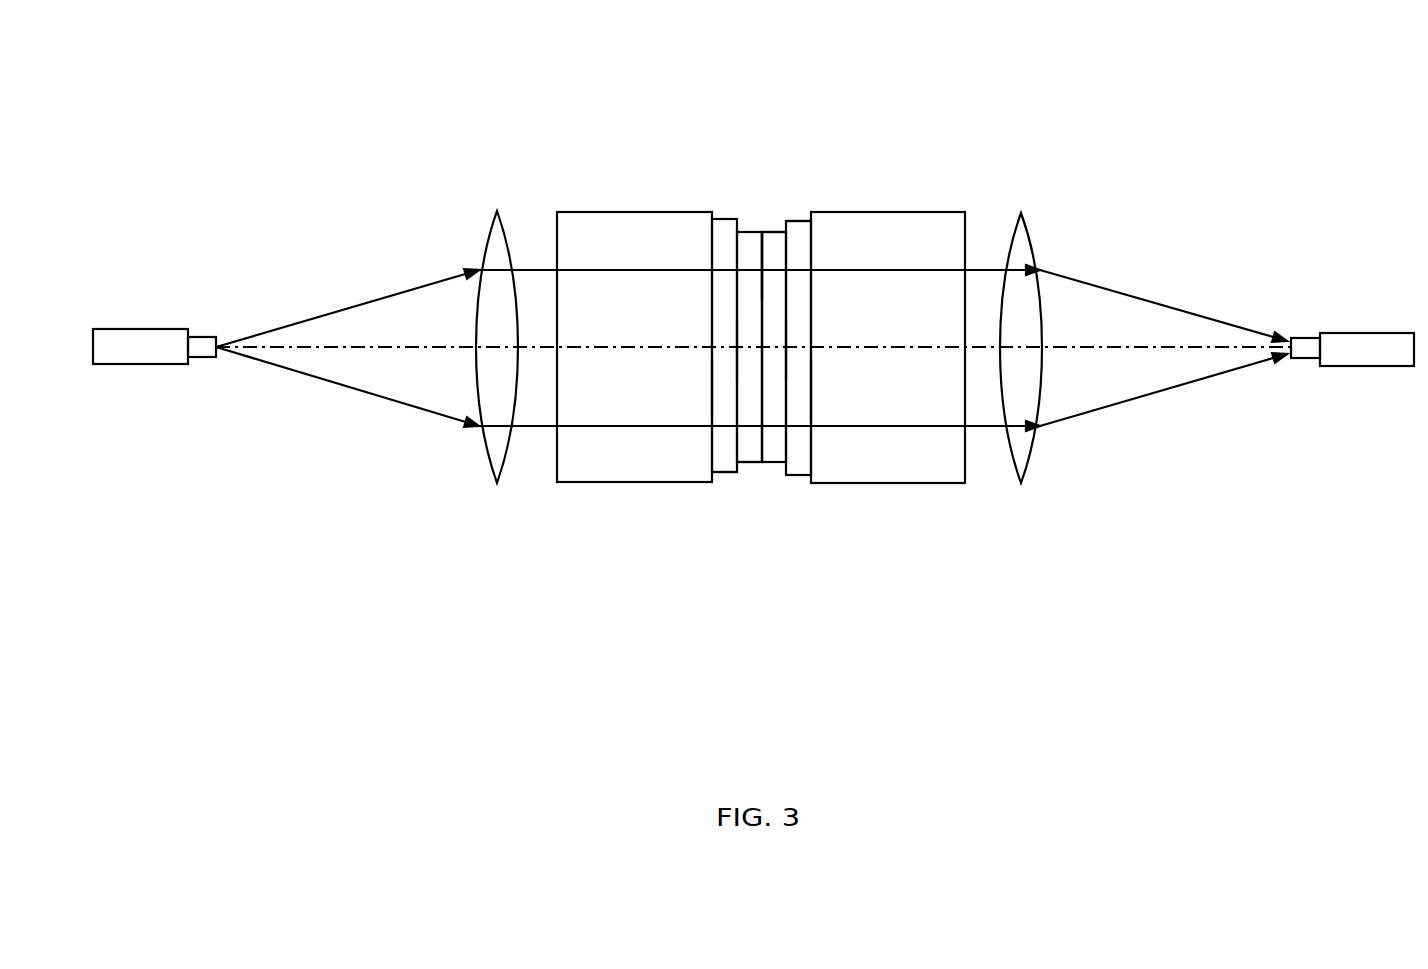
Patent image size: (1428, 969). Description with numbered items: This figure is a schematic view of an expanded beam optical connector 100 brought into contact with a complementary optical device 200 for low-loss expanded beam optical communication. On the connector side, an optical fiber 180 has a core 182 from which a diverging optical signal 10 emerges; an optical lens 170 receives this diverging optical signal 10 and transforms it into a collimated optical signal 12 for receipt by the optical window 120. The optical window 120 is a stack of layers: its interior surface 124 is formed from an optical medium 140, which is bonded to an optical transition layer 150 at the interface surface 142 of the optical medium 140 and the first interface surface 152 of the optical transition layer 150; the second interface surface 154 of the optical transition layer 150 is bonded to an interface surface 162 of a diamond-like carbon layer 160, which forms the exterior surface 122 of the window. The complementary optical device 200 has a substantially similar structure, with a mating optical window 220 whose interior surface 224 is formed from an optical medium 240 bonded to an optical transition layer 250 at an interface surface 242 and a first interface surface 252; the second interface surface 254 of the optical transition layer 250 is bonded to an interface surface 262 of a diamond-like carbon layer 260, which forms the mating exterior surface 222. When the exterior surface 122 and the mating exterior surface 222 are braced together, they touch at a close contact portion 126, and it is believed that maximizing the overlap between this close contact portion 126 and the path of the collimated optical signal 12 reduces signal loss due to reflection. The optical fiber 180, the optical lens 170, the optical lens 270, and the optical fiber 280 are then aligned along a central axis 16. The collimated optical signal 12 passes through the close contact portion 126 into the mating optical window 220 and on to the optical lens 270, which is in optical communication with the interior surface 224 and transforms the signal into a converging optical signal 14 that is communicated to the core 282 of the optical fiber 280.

The expanded beam optical connector 100 is at (557, 317).
The complementary optical device 200 is at (967, 336).
The diverging optical signal 10 is at (365, 283).
The collimated optical signal 12 is at (545, 257).
The converging optical signal 14 is at (1158, 297).
The central axis 16 is at (378, 347).
The optical fiber 180 is at (148, 312).
The core 182 is at (200, 360).
The optical fiber 280 is at (1368, 321).
The core 282 is at (1307, 362).
The optical lens 170 is at (497, 211).
The optical lens 270 is at (1021, 213).
The optical window 120 is at (624, 358).
The mating optical window 220 is at (905, 364).
The optical medium 140 is at (635, 211).
The optical medium 240 is at (873, 211).
The optical transition layer 150 is at (718, 219).
The optical transition layer 250 is at (797, 476).
The diamond-like carbon layer 160 is at (745, 232).
The diamond-like carbon layer 260 is at (772, 462).
The close contact portion 126 is at (762, 222).
The exterior surface 122 is at (762, 286).
The mating exterior surface 222 is at (762, 278).
The interior surface 124 is at (557, 482).
The interior surface 224 is at (965, 483).
The interface surface 142 is at (713, 383).
The interface surface 242 is at (811, 388).
The first interface surface 152 is at (716, 472).
The second interface surface 154 is at (737, 339).
The first interface surface 252 is at (803, 220).
The second interface surface 254 is at (786, 341).
The interface surface 162 is at (748, 462).
The interface surface 262 is at (781, 232).